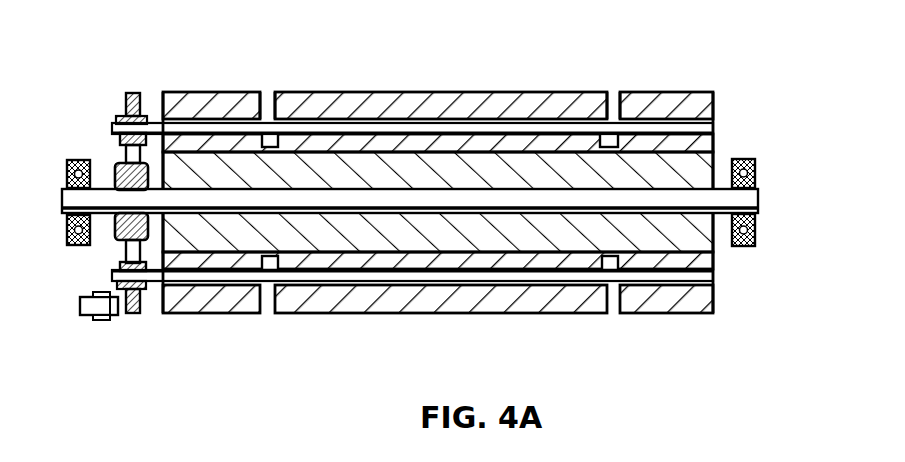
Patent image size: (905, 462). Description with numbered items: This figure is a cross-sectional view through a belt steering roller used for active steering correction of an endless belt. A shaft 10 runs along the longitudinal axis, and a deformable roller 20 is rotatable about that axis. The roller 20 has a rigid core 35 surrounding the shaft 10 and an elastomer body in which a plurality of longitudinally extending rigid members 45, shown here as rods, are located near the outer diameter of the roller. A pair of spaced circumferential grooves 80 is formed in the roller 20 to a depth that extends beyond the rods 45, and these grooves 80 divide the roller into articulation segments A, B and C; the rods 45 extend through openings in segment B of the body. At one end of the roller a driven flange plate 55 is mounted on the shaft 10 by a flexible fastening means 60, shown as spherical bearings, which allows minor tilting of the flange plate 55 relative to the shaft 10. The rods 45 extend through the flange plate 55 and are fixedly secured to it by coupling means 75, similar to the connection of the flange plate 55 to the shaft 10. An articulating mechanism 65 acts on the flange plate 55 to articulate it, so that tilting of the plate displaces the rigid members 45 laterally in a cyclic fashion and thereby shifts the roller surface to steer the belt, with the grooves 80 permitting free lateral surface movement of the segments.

The shaft 10 is at (752, 202).
The deformable roller 20 is at (467, 84).
The rigid core 35 is at (716, 163).
The longitudinally extending rigid members 45 is at (688, 283).
The flange plate 55 is at (117, 159).
The flexible fastening means 60 is at (109, 237).
The articulating mechanism 65 is at (100, 320).
The coupling means 75 is at (142, 118).
The circumferential grooves 80 is at (272, 98).
The articulation segment A is at (226, 88).
The articulation segment B is at (430, 84).
The articulation segment C is at (678, 86).